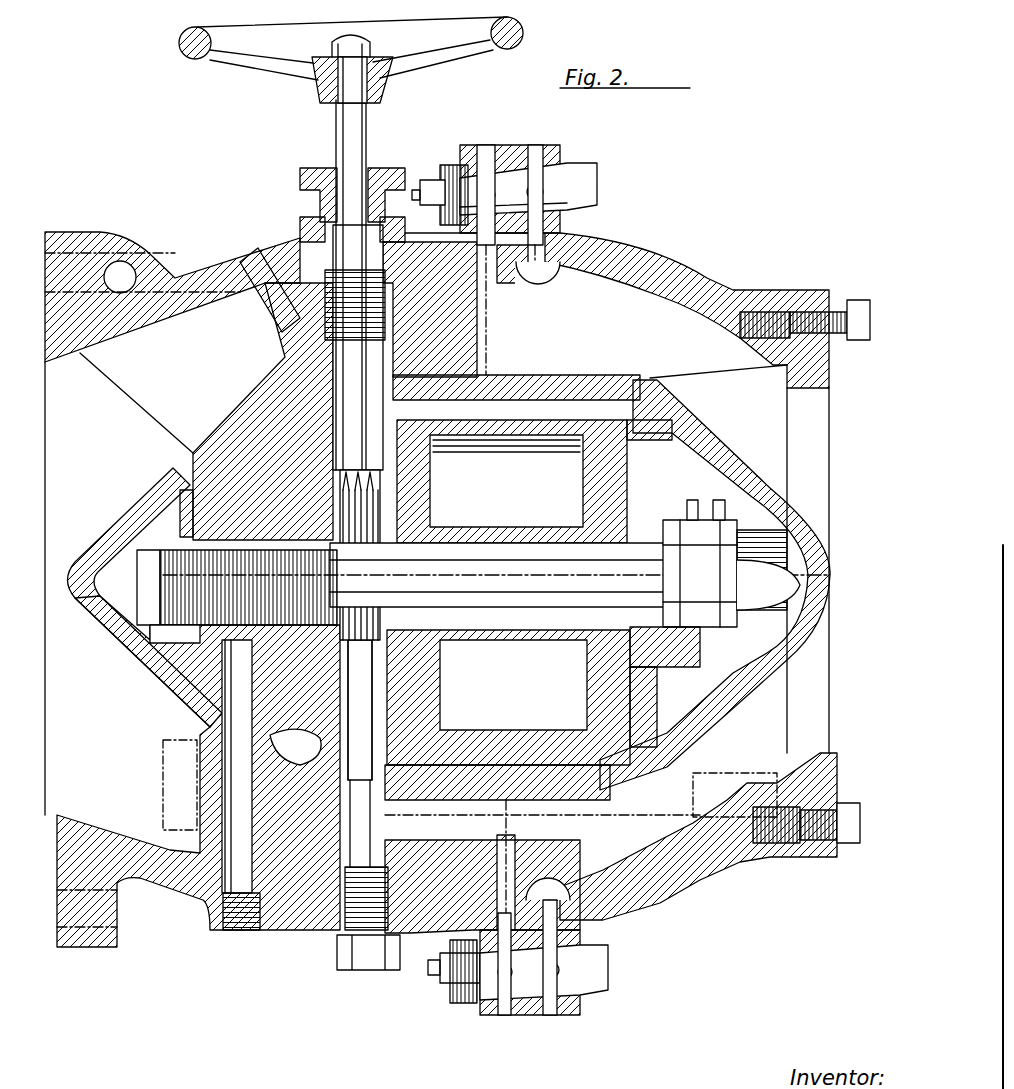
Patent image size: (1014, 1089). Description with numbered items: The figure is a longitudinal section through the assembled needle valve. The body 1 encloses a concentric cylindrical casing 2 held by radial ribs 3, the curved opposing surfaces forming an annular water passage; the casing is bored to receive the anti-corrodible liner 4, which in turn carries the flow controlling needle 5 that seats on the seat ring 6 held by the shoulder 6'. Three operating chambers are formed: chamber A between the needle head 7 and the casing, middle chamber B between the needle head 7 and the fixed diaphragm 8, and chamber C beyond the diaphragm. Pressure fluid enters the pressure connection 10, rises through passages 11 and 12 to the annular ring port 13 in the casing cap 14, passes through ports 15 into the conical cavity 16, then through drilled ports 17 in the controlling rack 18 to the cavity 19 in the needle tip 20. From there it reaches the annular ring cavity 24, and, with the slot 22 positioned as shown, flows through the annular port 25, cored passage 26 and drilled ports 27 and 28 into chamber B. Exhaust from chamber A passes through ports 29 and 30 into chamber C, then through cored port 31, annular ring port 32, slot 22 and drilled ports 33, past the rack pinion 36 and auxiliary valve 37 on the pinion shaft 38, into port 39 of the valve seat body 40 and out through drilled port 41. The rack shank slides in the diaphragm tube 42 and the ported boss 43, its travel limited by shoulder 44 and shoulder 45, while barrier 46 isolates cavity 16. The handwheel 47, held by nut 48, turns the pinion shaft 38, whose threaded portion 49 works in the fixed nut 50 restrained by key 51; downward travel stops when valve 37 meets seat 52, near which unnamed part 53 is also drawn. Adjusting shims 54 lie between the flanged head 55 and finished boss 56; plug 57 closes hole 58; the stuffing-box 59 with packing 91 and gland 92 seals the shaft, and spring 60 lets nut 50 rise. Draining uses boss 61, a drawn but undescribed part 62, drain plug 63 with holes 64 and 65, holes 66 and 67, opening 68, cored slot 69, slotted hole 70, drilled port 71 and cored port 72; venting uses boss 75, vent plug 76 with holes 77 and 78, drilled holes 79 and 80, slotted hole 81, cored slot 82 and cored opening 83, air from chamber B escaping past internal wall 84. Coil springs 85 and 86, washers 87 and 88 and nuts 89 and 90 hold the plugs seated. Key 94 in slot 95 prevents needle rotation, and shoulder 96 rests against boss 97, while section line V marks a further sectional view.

The body 1 is at (200, 275).
The cylindrical casing 2 is at (600, 360).
The radial ribs 3 is at (120, 810).
The anti-corrodible liner 4 is at (610, 800).
The flow controlling needle 5 is at (700, 435).
The seat ring 6 is at (805, 571).
The shoulder 6' is at (735, 580).
The needle head 7 is at (529, 592).
The fixed diaphragm 8 is at (580, 462).
The pressure connection 10 is at (205, 912).
The passage 11 is at (228, 790).
The passage 12 is at (163, 745).
The annular ring port 13 is at (185, 665).
The casing cap 14 is at (180, 515).
The ports 15 is at (140, 650).
The conical cavity 16 is at (118, 545).
The drilled ports 17 is at (735, 585).
The controlling rack 18 is at (485, 575).
The cavity 19 is at (770, 625).
The needle tip 20 is at (780, 520).
The slot 22 is at (700, 550).
The annular ring cavity 24 is at (700, 690).
The annular port 25 is at (750, 640).
The cored passage 26 is at (681, 701).
The drilled port 27 is at (630, 770).
The drilled port 28 is at (560, 740).
The drilled collecting port 29 is at (605, 395).
The cored port 30 is at (630, 380).
The cored port 31 is at (640, 645).
The annular ring port 32 is at (725, 650).
The drilled ports 33 is at (516, 655).
The rack pinion 36 is at (382, 500).
The auxiliary valve 37 is at (295, 747).
The pinion shaft 38 is at (478, 705).
The port 39 is at (245, 930).
The valve seat body 40 is at (280, 925).
The drilled port 41 is at (535, 835).
The diaphragm tube 42 is at (540, 530).
The ported boss 43 is at (740, 470).
The shoulder 44 is at (800, 600).
The shoulder 45 is at (660, 570).
The barrier 46 is at (150, 600).
The handwheel 47 is at (524, 38).
The nut 48 is at (318, 78).
The threaded portion 49 is at (300, 390).
The fixed nut 50 is at (292, 318).
The key 51 is at (330, 360).
The seat 52 is at (470, 735).
The stud 53 is at (705, 500).
The adjusting shims 54 is at (350, 935).
The flanged head 55 is at (362, 955).
The finished boss 56 is at (345, 930).
The plug 57 is at (285, 235).
The hole 58 is at (300, 345).
The stuffing-box 59 is at (318, 212).
The spring 60 is at (282, 300).
The boss 61 is at (585, 1018).
The stud 62 is at (530, 1015).
The drain plug 63 is at (600, 952).
The drilled hole 64 is at (502, 985).
The drilled hole 65 is at (560, 972).
The hole 66 is at (508, 1020).
The hole 67 is at (560, 1015).
The opening 68 is at (560, 895).
The cored slot 69 is at (438, 831).
The slotted hole 70 is at (500, 840).
The drilled port 71 is at (600, 815).
The cored port 72 is at (680, 757).
The boss 75 is at (563, 152).
The vent plug 76 is at (600, 180).
The drilled hole 77 is at (511, 188).
The drilled hole 78 is at (545, 202).
The drilled hole 79 is at (488, 145).
The drilled hole 80 is at (538, 145).
The slotted hole 81 is at (355, 360).
The cored slot 82 is at (470, 385).
The cored opening 83 is at (553, 272).
The internal wall 84 is at (580, 800).
The coil spring 85 is at (455, 165).
The coil spring 86 is at (458, 1003).
The washer 87 is at (445, 170).
The washer 88 is at (455, 990).
The nut 89 is at (425, 195).
The nut 90 is at (450, 965).
The packing 91 is at (310, 228).
The gland 92 is at (332, 180).
The key 94 is at (556, 655).
The slot 95 is at (440, 655).
The shoulder 96 is at (385, 690).
The boss 97 is at (152, 712).
The annular chamber A is at (212, 748).
The middle annular chamber B is at (529, 625).
The annular chamber C is at (647, 463).
The section V is at (800, 900).